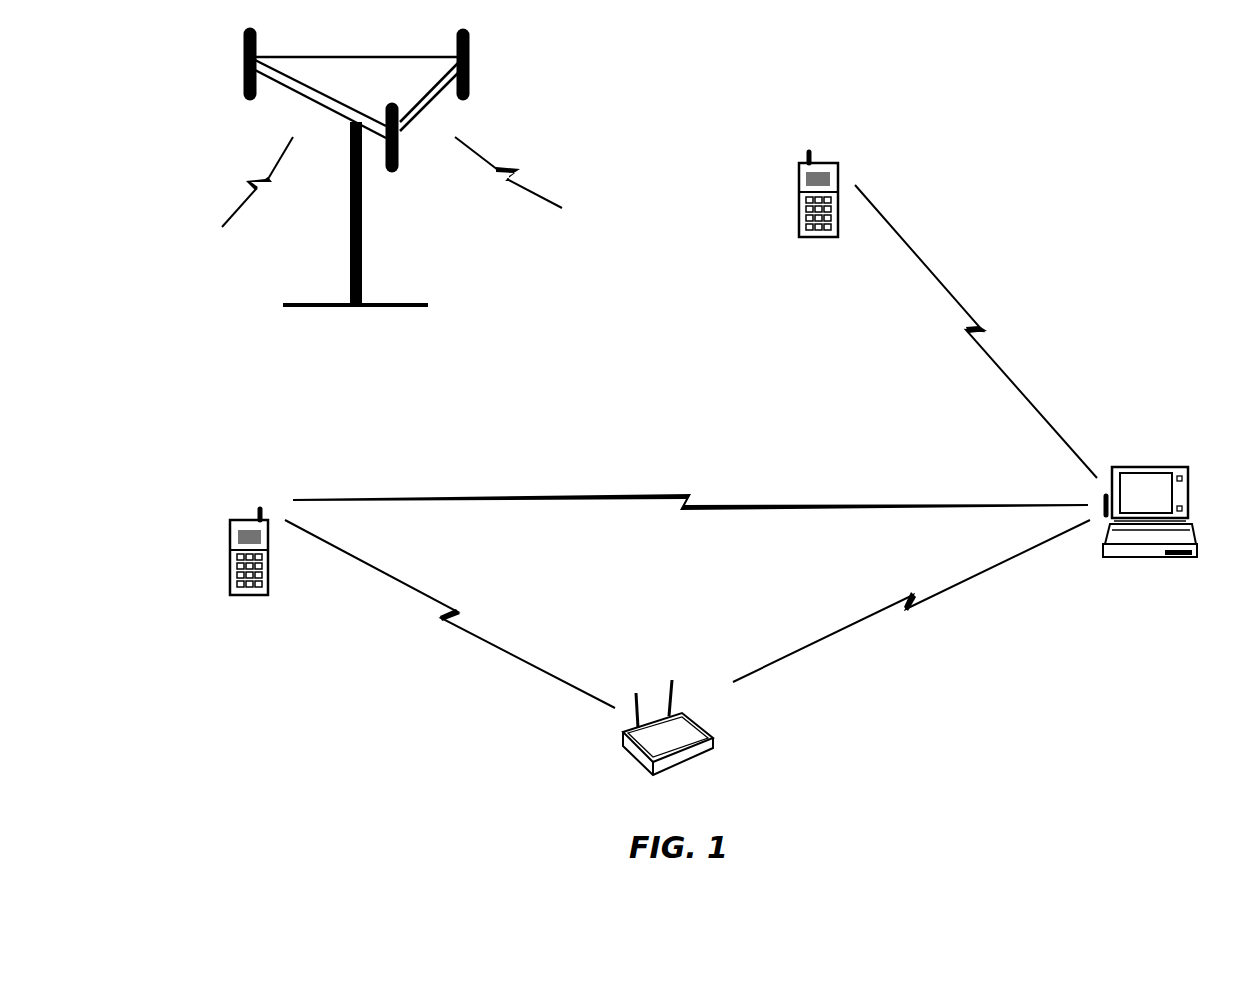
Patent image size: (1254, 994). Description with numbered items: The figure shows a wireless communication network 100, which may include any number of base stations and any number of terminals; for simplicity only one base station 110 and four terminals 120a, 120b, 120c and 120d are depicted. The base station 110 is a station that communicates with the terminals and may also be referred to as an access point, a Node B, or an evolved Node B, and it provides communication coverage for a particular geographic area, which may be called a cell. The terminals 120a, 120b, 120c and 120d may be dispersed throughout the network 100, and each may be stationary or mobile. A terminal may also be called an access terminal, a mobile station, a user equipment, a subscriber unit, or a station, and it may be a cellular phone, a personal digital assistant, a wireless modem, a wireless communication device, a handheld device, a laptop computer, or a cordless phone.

The wireless communication network 100 is at (1182, 196).
The base station 110 is at (353, 57).
The terminal 120a is at (243, 520).
The terminal 120b is at (1145, 467).
The terminal 120c is at (696, 720).
The terminal 120d is at (829, 164).